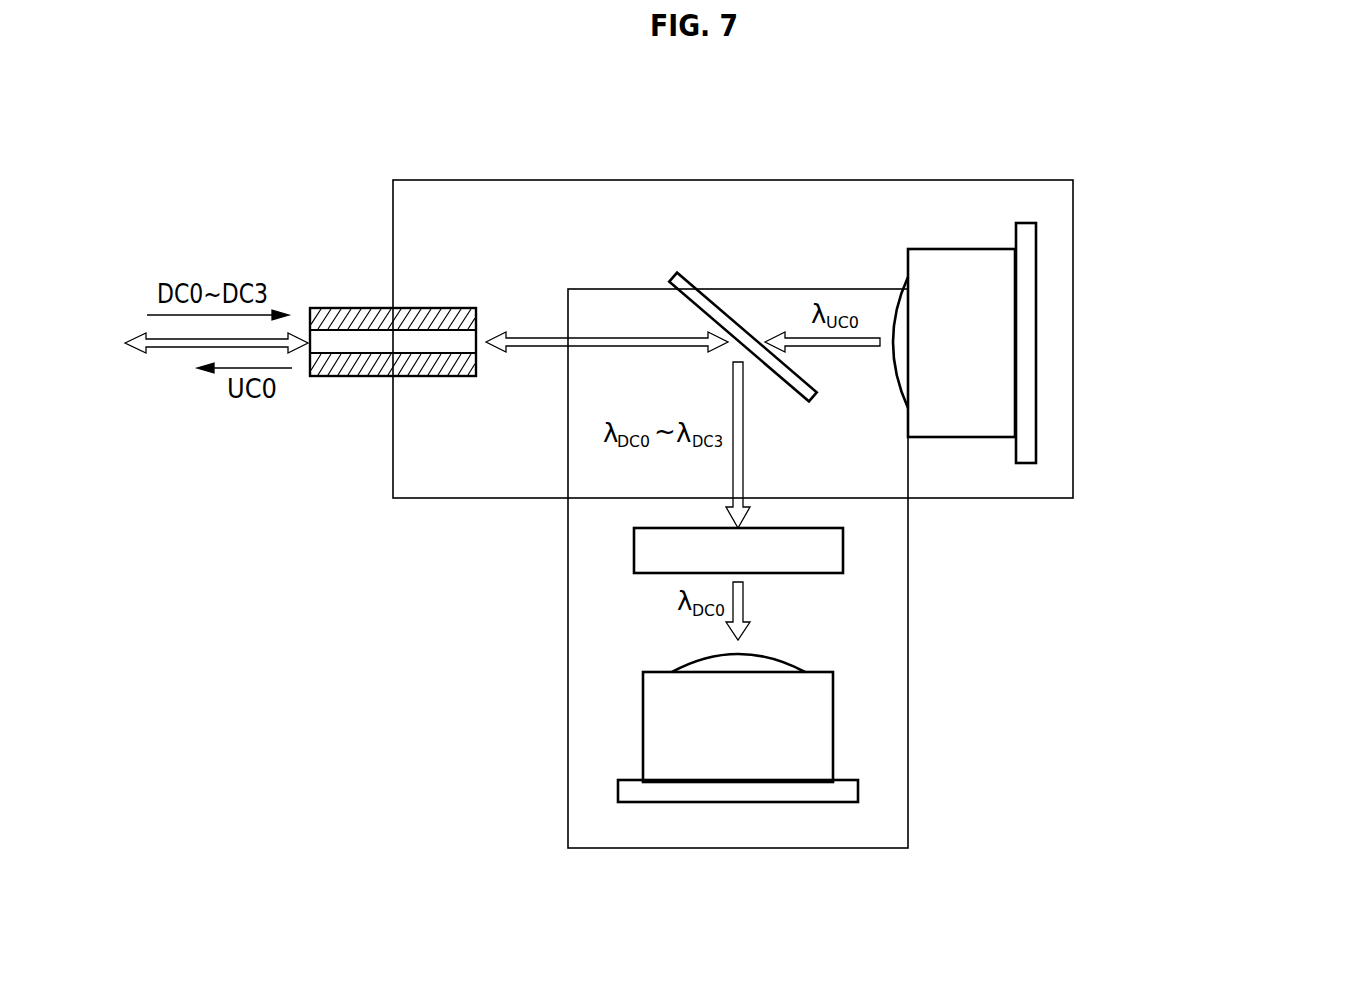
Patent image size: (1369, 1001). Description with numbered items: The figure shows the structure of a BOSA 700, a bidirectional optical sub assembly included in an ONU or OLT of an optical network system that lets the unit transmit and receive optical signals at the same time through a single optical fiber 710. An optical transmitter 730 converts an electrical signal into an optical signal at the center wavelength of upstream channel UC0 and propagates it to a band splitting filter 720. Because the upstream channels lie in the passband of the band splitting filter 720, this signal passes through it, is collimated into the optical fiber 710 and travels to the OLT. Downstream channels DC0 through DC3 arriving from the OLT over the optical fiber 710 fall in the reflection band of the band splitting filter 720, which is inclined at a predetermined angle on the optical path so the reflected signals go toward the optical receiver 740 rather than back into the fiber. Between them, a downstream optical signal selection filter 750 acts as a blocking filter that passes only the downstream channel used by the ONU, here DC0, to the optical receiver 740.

The BOSA 700 is at (1073, 230).
The optical fiber 710 is at (335, 377).
The band splitting filter 720 is at (732, 295).
The optical transmitter 730 is at (1037, 341).
The optical receiver 740 is at (833, 726).
The downstream optical signal selection filter 750 is at (843, 551).